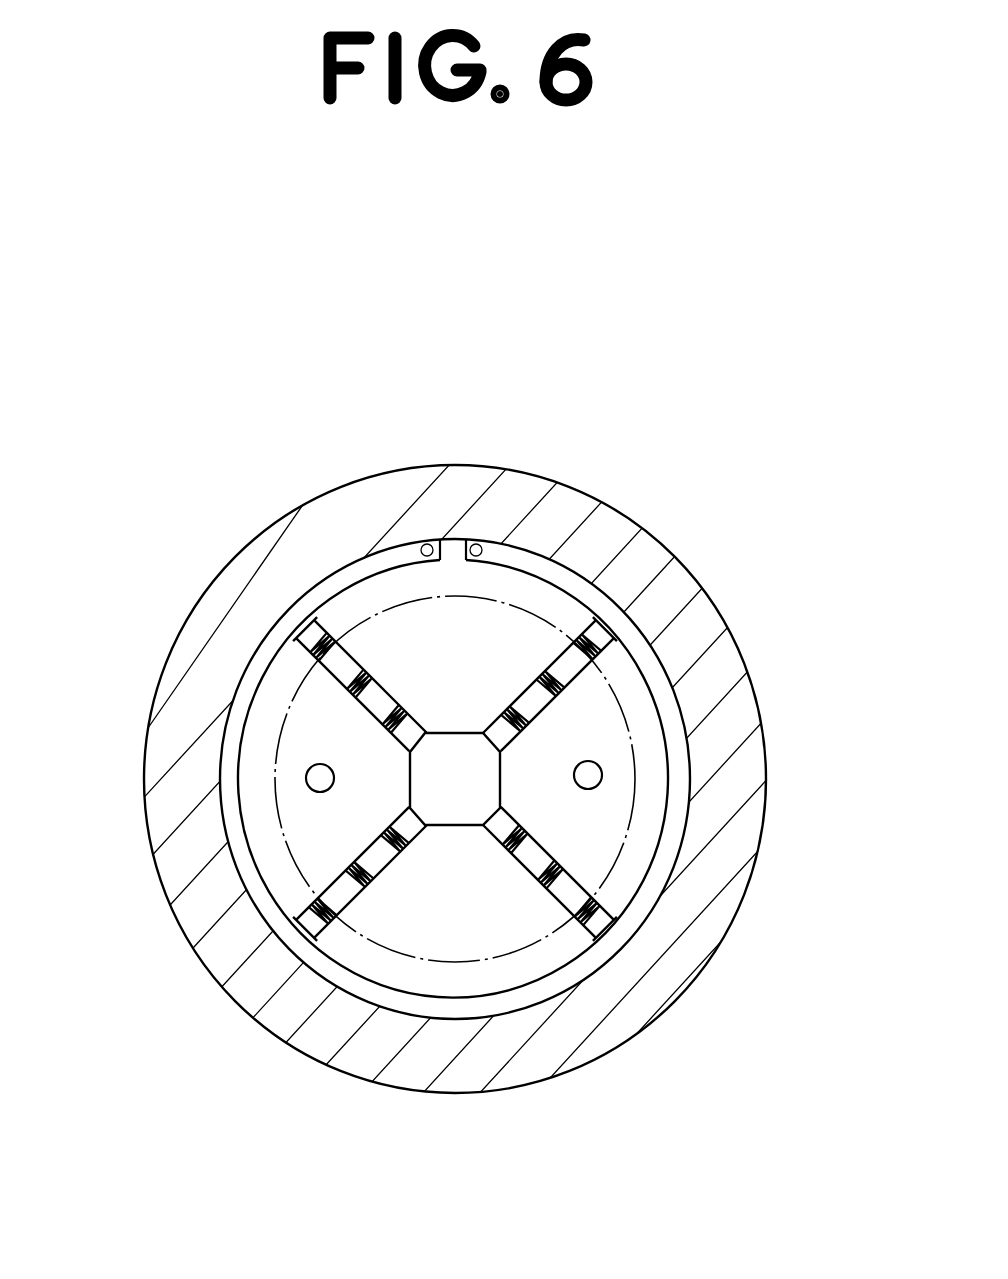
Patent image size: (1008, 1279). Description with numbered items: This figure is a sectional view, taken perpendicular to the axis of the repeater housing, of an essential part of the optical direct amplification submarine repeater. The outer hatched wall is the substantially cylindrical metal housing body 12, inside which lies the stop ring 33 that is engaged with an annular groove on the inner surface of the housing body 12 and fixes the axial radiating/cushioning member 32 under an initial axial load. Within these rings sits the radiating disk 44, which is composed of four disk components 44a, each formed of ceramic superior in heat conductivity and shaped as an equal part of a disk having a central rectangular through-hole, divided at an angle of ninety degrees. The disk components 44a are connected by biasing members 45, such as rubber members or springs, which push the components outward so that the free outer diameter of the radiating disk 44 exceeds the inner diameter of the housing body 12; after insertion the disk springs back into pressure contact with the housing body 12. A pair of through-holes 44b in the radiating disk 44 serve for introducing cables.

The housing body 12 is at (456, 466).
The stop ring 33 is at (368, 560).
The axial radiating/cushioning member 32 is at (297, 690).
The radiating disk 44 is at (600, 867).
The disk component 44a is at (526, 620).
The through-hole 44b is at (602, 775).
The biasing member 45 is at (400, 715).